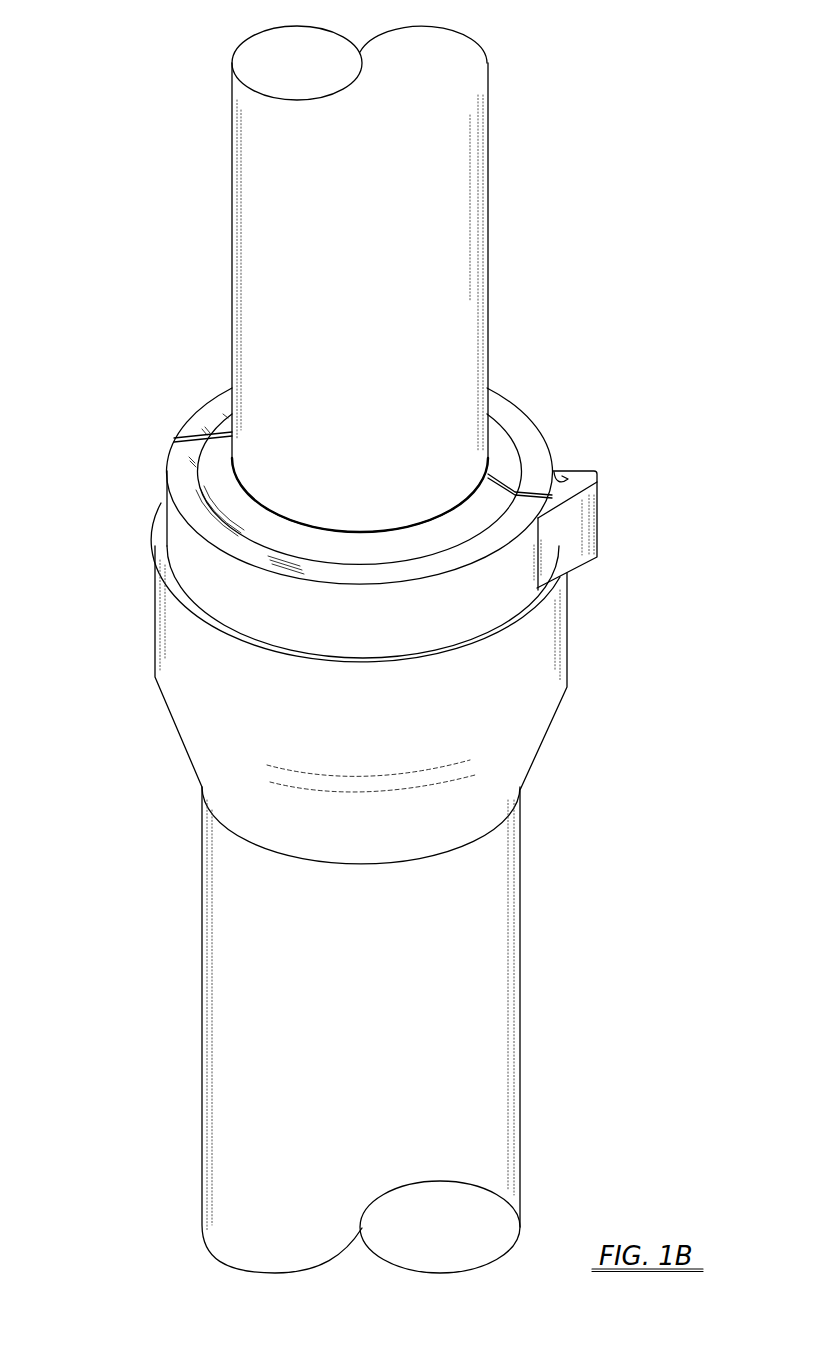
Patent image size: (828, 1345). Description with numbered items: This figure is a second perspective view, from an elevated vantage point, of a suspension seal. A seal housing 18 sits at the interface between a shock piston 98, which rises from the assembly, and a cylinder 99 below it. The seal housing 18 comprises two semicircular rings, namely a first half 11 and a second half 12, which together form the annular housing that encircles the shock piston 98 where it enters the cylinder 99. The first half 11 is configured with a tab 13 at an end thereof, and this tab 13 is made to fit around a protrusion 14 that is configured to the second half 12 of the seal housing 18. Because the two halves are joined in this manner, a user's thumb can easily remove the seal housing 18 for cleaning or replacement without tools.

The shock piston 98 is at (485, 222).
The second half 12 is at (552, 454).
The seal housing 18 is at (220, 480).
The first half 11 is at (203, 423).
The tab 13 is at (598, 527).
The protrusion 14 is at (597, 488).
The cylinder 99 is at (552, 692).